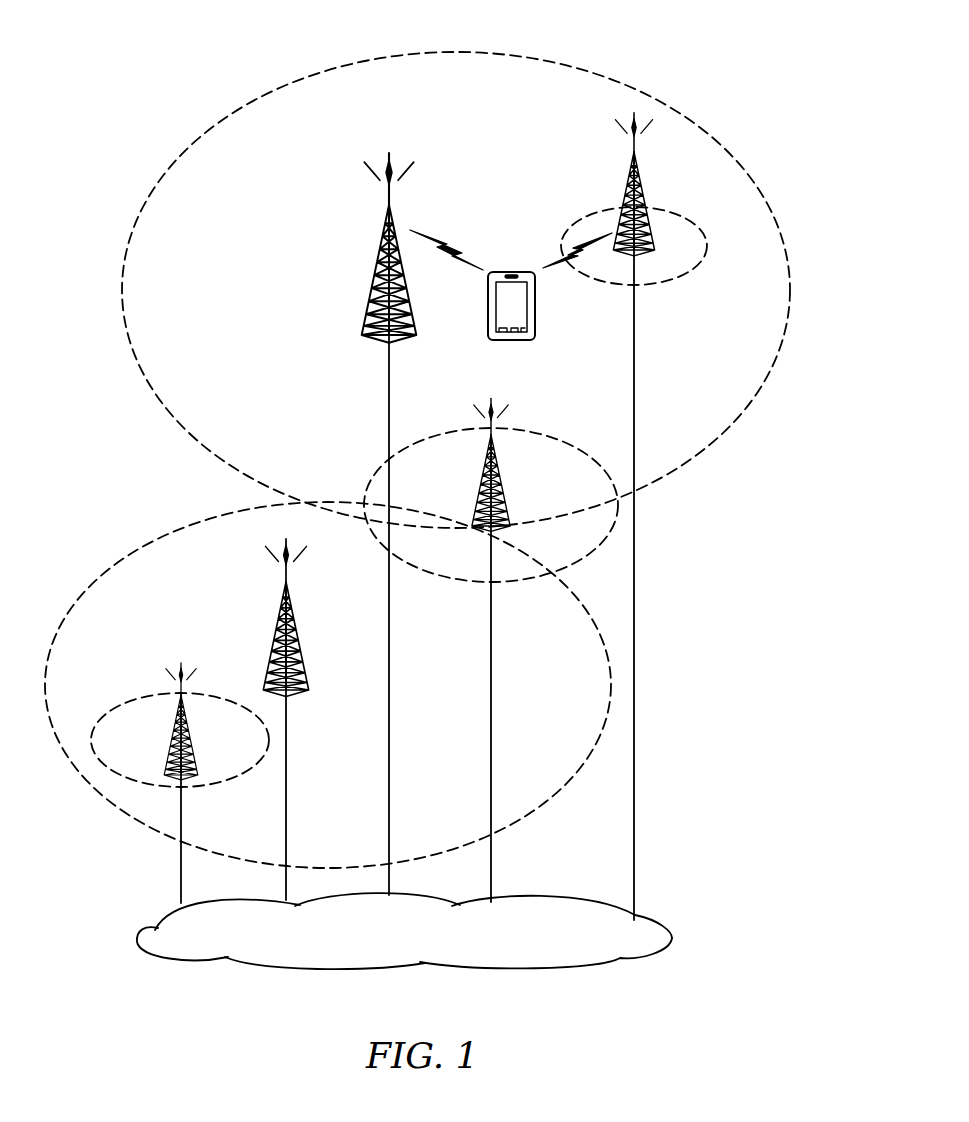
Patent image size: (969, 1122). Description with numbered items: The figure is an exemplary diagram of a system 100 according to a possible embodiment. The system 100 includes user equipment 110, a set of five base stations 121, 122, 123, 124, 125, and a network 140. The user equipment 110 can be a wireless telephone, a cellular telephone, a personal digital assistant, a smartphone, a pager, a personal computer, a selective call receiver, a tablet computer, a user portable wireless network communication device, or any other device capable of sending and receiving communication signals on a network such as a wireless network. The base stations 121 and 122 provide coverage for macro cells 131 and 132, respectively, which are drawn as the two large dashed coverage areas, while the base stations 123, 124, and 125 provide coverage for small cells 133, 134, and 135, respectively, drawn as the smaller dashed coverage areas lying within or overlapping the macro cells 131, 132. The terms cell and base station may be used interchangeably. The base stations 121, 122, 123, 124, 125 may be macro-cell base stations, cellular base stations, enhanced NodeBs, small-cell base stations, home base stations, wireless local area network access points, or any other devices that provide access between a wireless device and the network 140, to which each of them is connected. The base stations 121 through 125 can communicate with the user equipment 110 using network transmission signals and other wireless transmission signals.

The system 100 is at (662, 52).
The user equipment 110 is at (486, 303).
The base station 121 is at (375, 272).
The base station 122 is at (272, 647).
The base station 123 is at (481, 472).
The base station 124 is at (628, 180).
The base station 125 is at (170, 737).
The macro cell 131 is at (233, 118).
The macro cell 132 is at (162, 540).
The small cell 133 is at (548, 434).
The small cell 134 is at (670, 213).
The small cell 135 is at (130, 700).
The network 140 is at (512, 970).